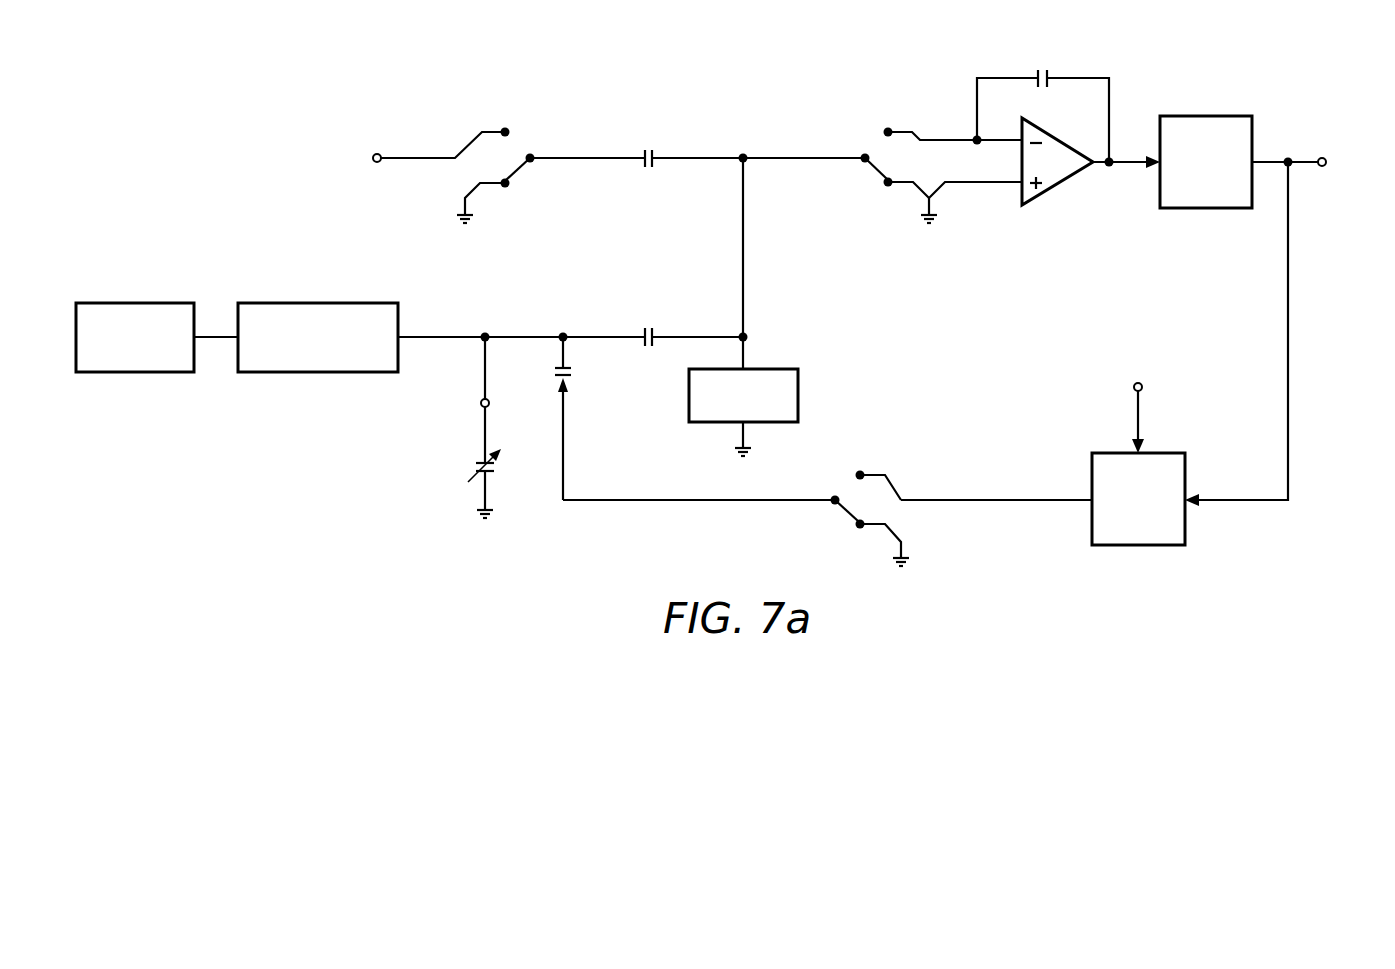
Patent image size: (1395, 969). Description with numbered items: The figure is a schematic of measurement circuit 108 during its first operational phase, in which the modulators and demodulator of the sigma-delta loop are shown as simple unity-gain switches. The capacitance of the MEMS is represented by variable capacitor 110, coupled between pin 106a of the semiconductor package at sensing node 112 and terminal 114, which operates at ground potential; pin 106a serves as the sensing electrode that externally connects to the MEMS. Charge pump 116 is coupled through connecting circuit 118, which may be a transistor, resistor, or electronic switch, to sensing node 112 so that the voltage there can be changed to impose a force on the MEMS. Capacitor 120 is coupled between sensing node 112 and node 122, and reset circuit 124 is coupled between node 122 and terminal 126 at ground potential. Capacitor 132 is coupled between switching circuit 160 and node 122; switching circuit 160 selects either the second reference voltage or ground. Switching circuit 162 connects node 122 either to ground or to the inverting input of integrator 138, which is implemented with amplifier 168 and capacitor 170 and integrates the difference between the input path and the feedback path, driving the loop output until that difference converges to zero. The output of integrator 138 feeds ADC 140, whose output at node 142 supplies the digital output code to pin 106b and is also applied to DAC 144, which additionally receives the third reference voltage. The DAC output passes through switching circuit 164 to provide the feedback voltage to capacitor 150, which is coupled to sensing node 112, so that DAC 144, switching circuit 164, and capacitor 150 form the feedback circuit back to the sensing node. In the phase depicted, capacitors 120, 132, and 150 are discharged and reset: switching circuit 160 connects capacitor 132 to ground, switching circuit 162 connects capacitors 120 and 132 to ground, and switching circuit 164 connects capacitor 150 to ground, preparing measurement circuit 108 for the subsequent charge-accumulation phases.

The measurement circuit 108 is at (298, 68).
The charge pump 116 is at (135, 302).
The connecting circuit 118 is at (318, 302).
The sensing node 112 is at (485, 333).
The pin 106a is at (480, 406).
The variable capacitor 110 is at (470, 468).
The terminal 114 is at (480, 522).
The capacitor 120 is at (651, 327).
The capacitor 150 is at (575, 369).
The node 122 is at (745, 153).
The reset circuit 124 is at (800, 395).
The terminal 126 is at (746, 457).
The capacitor 132 is at (650, 150).
The switching circuit 160 is at (520, 165).
The switching circuit 162 is at (878, 172).
The integrator 138 is at (1046, 109).
The capacitor 170 is at (1046, 70).
The amplifier 168 is at (1060, 180).
The ADC 140 is at (1205, 115).
The node 142 is at (1290, 157).
The pin 106b is at (1325, 168).
The DAC 144 is at (1140, 547).
The switching circuit 164 is at (846, 510).